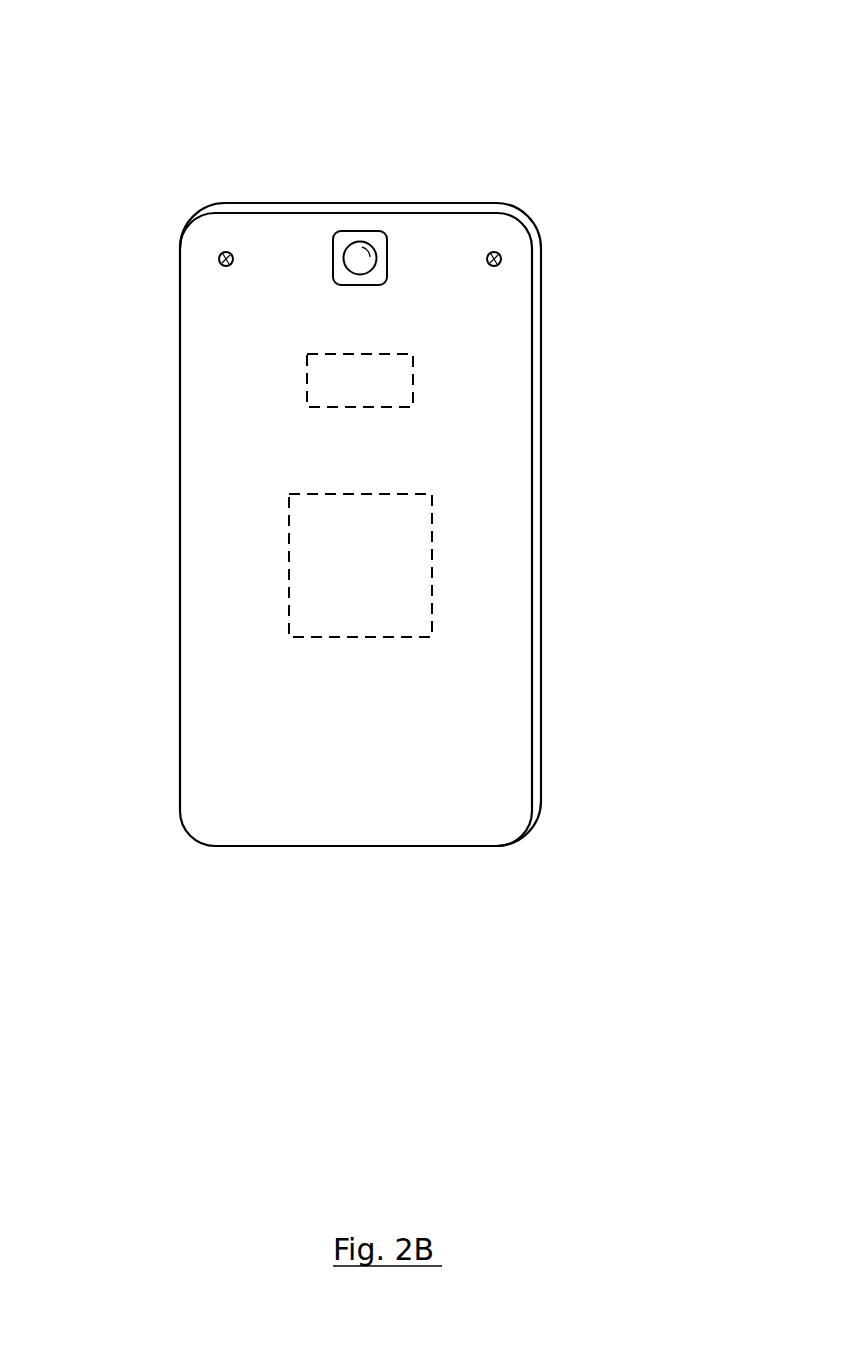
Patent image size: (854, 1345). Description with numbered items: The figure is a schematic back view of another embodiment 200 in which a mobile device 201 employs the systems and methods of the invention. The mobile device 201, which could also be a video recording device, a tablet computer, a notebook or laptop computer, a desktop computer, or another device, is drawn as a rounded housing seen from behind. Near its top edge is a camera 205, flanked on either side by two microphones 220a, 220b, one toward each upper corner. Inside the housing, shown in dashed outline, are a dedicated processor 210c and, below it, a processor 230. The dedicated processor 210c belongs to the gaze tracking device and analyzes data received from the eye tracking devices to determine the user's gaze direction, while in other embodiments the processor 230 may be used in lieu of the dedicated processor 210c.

The embodiment 200 is at (440, 89).
The mobile device 201 is at (530, 206).
The camera 205 is at (372, 242).
The microphone 220a is at (219, 256).
The microphone 220b is at (501, 256).
The dedicated processor 210c is at (413, 370).
The processor 230 is at (432, 532).